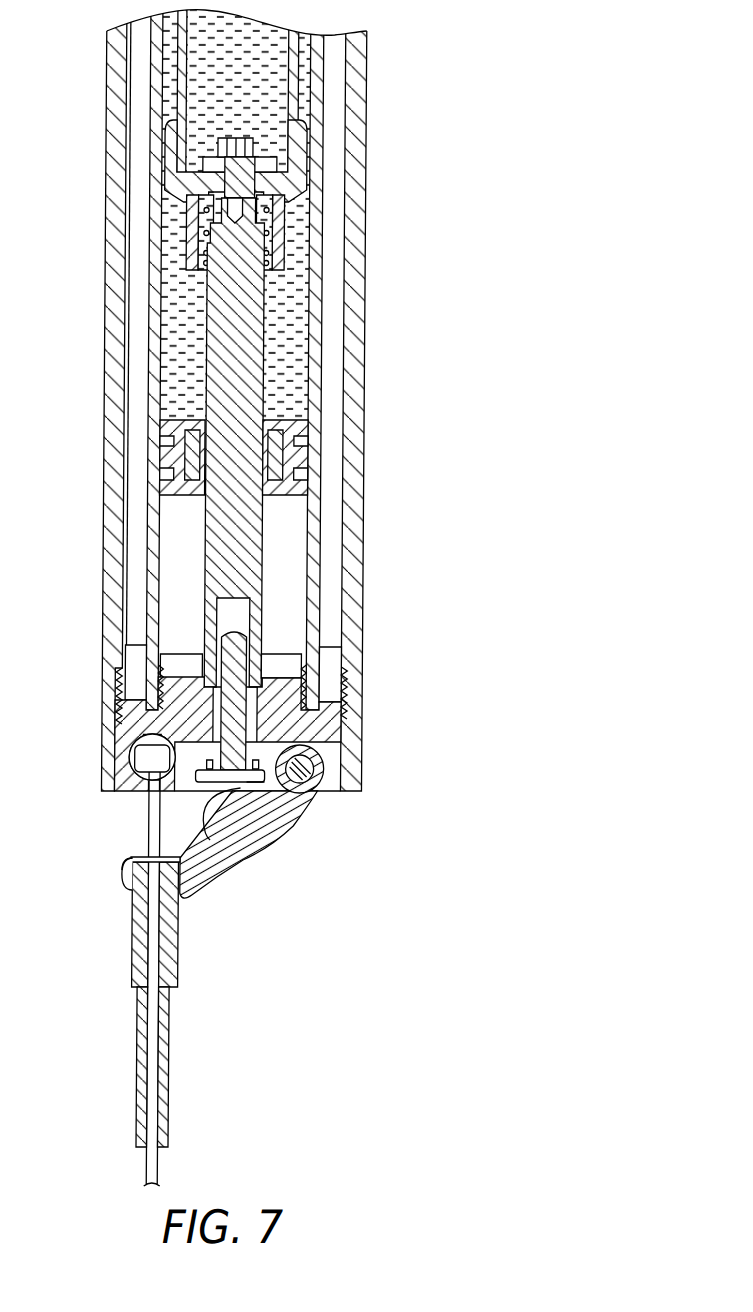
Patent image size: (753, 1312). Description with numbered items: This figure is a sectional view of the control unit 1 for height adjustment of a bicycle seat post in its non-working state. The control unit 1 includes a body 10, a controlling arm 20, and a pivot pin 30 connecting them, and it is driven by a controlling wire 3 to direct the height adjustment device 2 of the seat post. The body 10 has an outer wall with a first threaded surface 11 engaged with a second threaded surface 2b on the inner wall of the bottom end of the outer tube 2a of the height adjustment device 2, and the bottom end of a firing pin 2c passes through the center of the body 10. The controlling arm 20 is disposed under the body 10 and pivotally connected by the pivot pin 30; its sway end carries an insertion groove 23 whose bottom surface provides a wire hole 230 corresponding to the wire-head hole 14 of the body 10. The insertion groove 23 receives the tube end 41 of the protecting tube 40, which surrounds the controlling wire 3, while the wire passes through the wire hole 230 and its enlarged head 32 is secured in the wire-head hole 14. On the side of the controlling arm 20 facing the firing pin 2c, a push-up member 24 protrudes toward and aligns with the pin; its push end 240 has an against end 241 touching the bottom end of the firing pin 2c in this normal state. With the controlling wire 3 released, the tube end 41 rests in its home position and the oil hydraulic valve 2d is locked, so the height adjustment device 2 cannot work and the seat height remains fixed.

The control unit 1 is at (235, 593).
The height adjustment device 2 is at (235, 467).
The outer tube 2a is at (354, 567).
The second threaded surface 2b is at (125, 697).
The firing pin 2c is at (244, 537).
The oil hydraulic valve 2d is at (259, 160).
The controlling wire 3 is at (161, 820).
The body 10 is at (310, 727).
The first threaded surface 11 is at (353, 695).
The wire-head hole 14 is at (155, 735).
The controlling arm 20 is at (275, 821).
The insertion groove 23 is at (138, 885).
The push-up member 24 is at (244, 786).
The pivot pin 30 is at (306, 768).
The enlarged head 32 is at (155, 760).
The protecting tube 40 is at (149, 1061).
The tube end 41 is at (150, 932).
The wire hole 230 is at (139, 861).
The push end 240 is at (252, 787).
The against end 241 is at (266, 788).